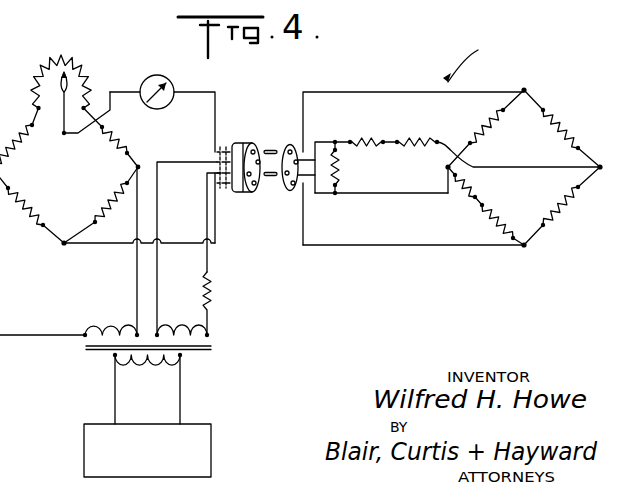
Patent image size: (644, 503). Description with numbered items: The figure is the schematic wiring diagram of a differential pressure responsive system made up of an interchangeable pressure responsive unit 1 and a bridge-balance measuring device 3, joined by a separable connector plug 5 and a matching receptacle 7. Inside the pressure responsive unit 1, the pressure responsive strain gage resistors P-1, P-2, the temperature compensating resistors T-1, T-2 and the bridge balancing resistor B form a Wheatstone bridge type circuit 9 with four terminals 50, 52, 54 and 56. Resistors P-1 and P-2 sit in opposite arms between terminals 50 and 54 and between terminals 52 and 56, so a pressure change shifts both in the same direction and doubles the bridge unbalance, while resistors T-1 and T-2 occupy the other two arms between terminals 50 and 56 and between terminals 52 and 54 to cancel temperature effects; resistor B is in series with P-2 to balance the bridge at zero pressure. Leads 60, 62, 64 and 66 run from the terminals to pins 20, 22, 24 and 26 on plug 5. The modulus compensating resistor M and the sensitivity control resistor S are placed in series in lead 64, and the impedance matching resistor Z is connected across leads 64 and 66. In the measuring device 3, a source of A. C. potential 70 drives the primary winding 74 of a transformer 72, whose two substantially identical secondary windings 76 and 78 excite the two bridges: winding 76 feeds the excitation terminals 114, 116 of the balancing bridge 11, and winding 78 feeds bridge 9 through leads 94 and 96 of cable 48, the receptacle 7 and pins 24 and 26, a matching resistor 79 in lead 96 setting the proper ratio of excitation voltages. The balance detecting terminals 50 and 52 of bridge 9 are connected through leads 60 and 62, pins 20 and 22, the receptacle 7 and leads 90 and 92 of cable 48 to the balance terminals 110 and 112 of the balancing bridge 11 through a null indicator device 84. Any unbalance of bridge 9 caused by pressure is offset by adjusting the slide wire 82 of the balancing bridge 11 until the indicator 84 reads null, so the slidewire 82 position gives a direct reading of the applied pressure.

The interchangeable pressure responsive unit 1 is at (465, 64).
The bridge-balance measuring device 3 is at (176, 131).
The separable connector plug 5 is at (295, 150).
The receptacle 7 is at (236, 141).
The Wheatstone bridge type circuit 9 is at (527, 150).
The balancing bridge circuit 11 is at (68, 207).
The plug pin 20 is at (266, 168).
The plug pin 22 is at (284, 189).
The plug pin 24 is at (280, 150).
The plug pin 26 is at (269, 178).
The cable 48 is at (224, 192).
The bridge terminal 50 is at (525, 89).
The bridge terminal 52 is at (526, 248).
The bridge terminal 54 is at (599, 164).
The bridge terminal 56 is at (446, 168).
The lead 60 is at (362, 92).
The lead 62 is at (360, 246).
The lead 64 is at (319, 141).
The lead 66 is at (317, 194).
The source of A. C. potential 70 is at (100, 433).
The transformer 72 is at (198, 351).
The primary winding 74 is at (157, 367).
The secondary winding 76 is at (117, 322).
The secondary winding 78 is at (180, 325).
The matching resistor 79 is at (213, 288).
The slide wire 82 is at (88, 78).
The null indicator device 84 is at (151, 76).
The lead 90 is at (191, 91).
The lead 92 is at (215, 231).
The lead 94 is at (157, 228).
The lead 96 is at (206, 199).
The balance terminal 110 is at (63, 134).
The balance terminal 112 is at (62, 245).
The excitation terminal 114 is at (0, 168).
The excitation terminal 116 is at (136, 167).
The impedance matching resistor Z is at (338, 165).
The modulus compensating resistor M is at (362, 147).
The sensitivity control resistor S is at (424, 141).
The bridge balancing resistor B is at (474, 184).
The temperature compensating resistor T-1 is at (486, 126).
The temperature compensating resistor T-2 is at (573, 207).
The pressure responsive strain gage resistor P-1 is at (567, 124).
The pressure responsive strain gage resistor P-2 is at (497, 229).